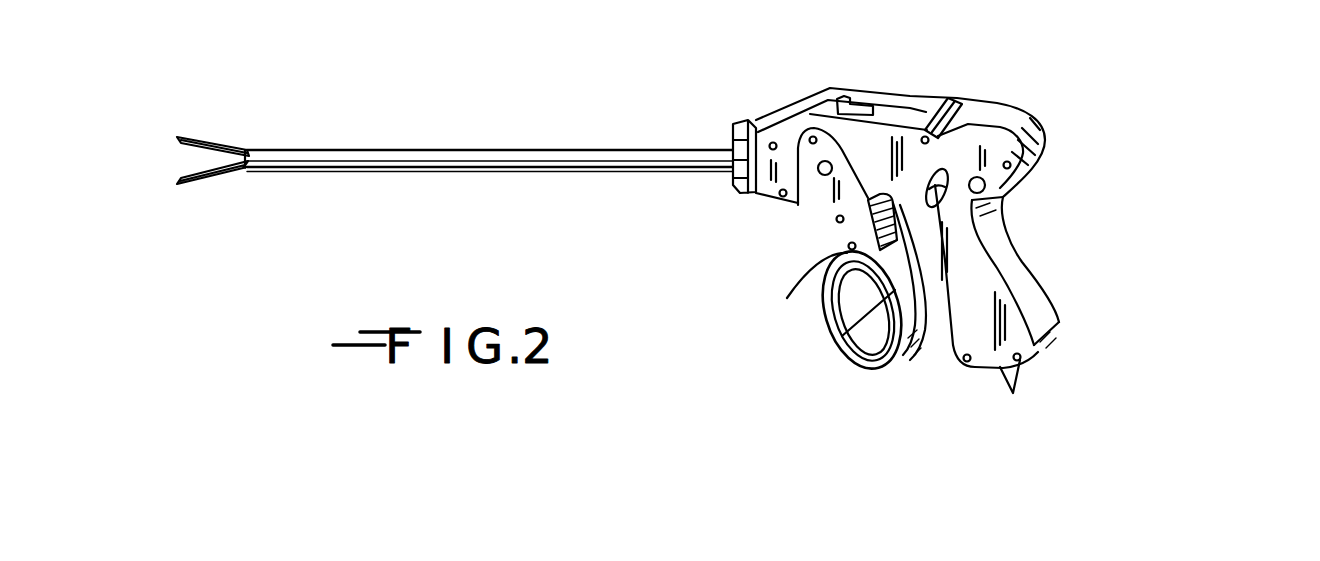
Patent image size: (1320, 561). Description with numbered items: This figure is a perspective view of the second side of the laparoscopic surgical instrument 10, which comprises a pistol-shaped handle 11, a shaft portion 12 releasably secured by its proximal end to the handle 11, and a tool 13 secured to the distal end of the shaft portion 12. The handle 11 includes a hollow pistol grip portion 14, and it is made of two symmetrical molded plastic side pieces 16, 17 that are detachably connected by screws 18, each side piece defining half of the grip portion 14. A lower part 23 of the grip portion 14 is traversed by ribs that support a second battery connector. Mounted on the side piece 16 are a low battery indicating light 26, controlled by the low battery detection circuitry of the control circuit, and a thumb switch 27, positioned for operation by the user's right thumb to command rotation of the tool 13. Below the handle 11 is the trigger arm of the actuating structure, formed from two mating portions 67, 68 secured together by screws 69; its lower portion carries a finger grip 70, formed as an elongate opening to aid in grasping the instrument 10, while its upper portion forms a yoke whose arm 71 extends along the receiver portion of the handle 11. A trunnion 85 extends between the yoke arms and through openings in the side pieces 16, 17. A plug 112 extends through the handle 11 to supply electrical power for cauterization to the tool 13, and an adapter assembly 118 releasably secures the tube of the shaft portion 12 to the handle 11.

The laparoscopic surgical instrument 10 is at (1163, 130).
The pistol-shaped handle 11 is at (953, 226).
The shaft portion 12 is at (418, 150).
The tool 13 is at (218, 141).
The pistol grip portion 14 is at (980, 281).
The side piece 16 is at (1043, 145).
The side piece 17 is at (1043, 118).
The screws 18 is at (1017, 375).
The lower part of the grip portion 23 is at (1022, 364).
The low battery indicating light 26 is at (1005, 185).
The thumb switch 27 is at (975, 120).
The mating portion of trigger arm 67 is at (916, 345).
The mating portion of trigger arm 68 is at (922, 338).
The screws 69 is at (840, 222).
The finger grip 70 is at (848, 342).
The yoke arm 71 is at (823, 177).
The trunnion 85 is at (822, 174).
The plug 112 is at (862, 93).
The adapter assembly 118 is at (719, 141).